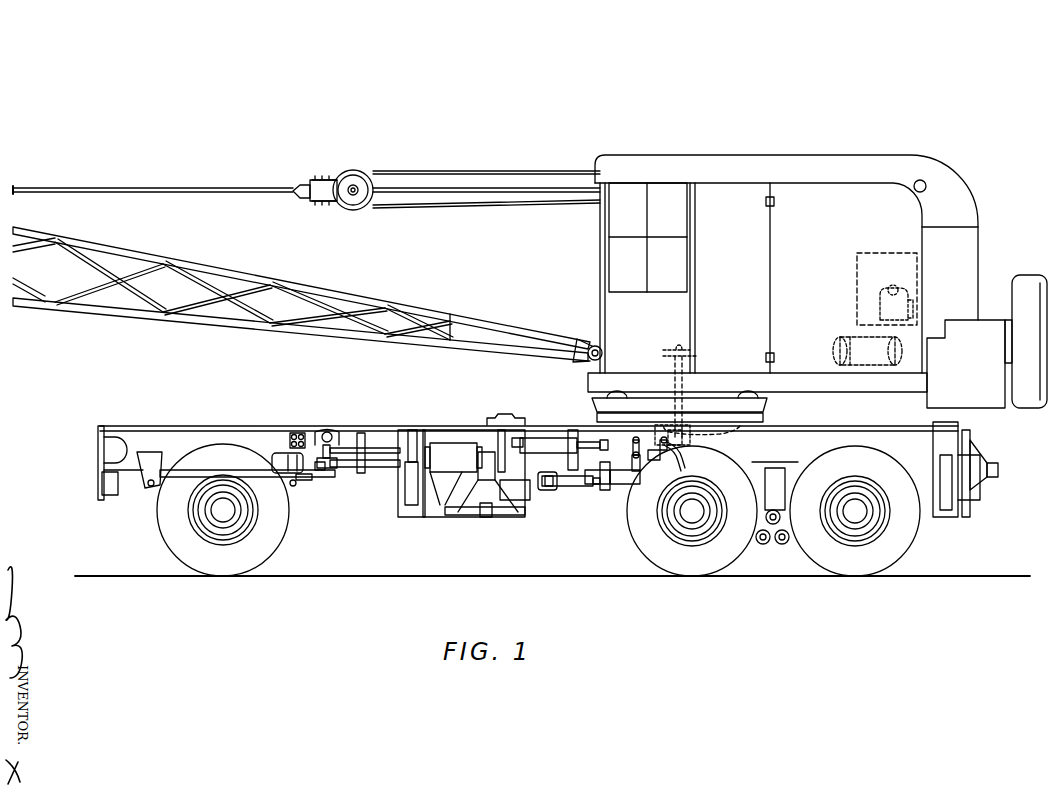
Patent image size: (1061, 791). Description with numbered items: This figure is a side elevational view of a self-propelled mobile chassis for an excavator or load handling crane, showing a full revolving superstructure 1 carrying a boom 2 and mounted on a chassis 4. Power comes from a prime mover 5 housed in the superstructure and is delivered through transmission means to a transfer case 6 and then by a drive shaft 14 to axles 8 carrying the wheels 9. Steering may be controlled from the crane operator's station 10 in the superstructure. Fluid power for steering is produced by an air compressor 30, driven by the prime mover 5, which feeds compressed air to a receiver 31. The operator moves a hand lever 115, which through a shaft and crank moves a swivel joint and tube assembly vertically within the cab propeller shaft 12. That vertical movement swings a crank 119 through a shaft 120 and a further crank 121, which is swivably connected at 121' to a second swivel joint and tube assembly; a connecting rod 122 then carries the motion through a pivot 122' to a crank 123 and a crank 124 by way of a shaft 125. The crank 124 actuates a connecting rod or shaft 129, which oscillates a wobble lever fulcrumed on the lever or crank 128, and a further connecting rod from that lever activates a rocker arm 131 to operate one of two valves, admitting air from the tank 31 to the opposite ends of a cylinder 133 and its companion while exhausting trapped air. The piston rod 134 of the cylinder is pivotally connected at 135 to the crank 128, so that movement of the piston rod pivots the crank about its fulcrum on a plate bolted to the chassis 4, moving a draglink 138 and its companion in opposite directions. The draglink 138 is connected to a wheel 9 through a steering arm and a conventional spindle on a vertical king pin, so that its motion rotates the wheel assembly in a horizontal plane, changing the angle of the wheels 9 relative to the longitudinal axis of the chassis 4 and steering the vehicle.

The full revolving superstructure 1 is at (828, 162).
The boom 2 is at (344, 294).
The chassis 4 is at (172, 440).
The prime mover 5 is at (857, 254).
The transfer case 6 is at (517, 413).
The axles 8 is at (220, 512).
The wheels 9 is at (273, 544).
The crane operator's station 10 is at (662, 219).
The cab propeller shaft 12 is at (696, 428).
The drive shaft 14 is at (607, 488).
The air compressor 30 is at (878, 298).
The receiver 31 is at (844, 336).
The hand lever 115 is at (676, 362).
The crank 119 is at (655, 458).
The shaft 120 is at (677, 466).
The crank 121 is at (685, 453).
The swivel connection 121' is at (650, 435).
The connecting rod 122 is at (620, 451).
The pivot 122' is at (640, 483).
The crank 123 is at (620, 481).
The crank 124 is at (588, 449).
The shaft 125 is at (592, 486).
The crank 128 is at (336, 440).
The connecting rod or shaft 129 is at (380, 447).
The rocker arm 131 is at (298, 432).
The cylinder 133 is at (452, 465).
The piston rod 134 is at (386, 466).
The pivotal connection 135 is at (327, 465).
The draglink 138 is at (305, 480).